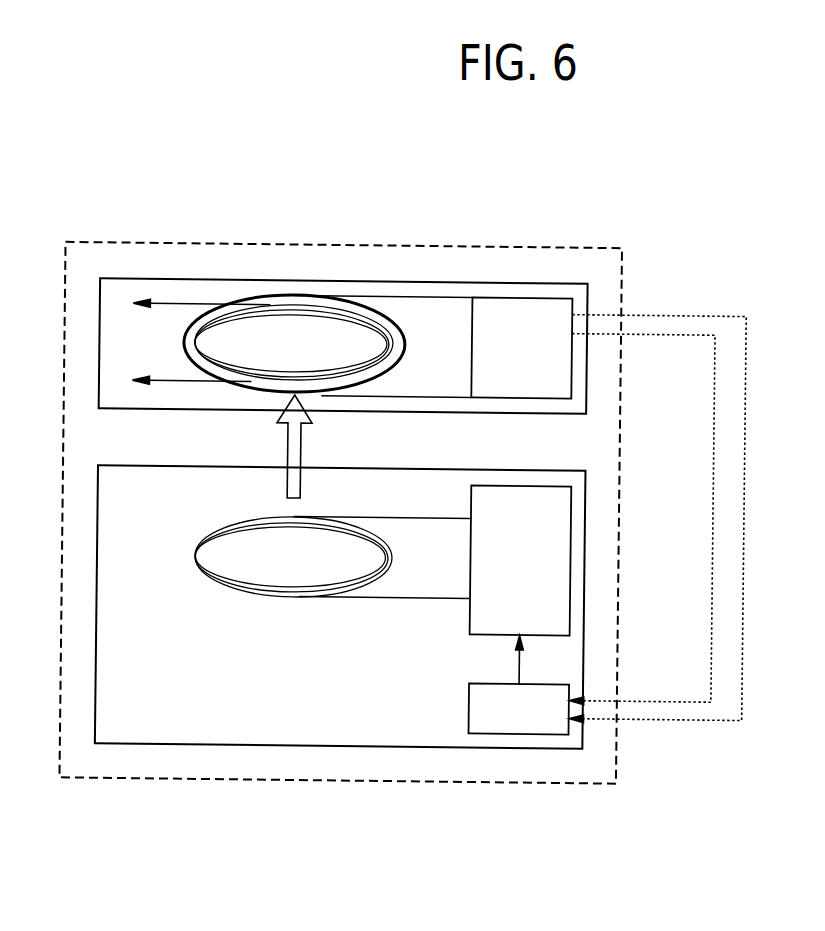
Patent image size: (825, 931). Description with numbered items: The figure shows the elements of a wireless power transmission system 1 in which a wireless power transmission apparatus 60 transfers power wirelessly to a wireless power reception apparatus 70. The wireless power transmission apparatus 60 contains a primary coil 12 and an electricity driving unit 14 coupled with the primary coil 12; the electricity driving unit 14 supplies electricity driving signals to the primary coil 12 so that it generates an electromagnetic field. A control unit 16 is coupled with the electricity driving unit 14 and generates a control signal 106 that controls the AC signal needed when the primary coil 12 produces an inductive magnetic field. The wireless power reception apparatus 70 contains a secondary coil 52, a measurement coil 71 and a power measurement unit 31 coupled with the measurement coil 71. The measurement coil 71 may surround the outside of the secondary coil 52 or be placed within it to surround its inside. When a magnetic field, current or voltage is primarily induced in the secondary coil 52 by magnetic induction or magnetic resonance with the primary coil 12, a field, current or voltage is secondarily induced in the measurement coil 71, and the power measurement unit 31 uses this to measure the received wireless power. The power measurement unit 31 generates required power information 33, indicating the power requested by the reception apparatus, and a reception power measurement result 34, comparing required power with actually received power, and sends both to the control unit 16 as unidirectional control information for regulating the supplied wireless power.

The wireless power transmission system 1 is at (535, 786).
The wireless power reception apparatus 70 is at (411, 280).
The measurement coil 71 is at (189, 358).
The secondary coil 52 is at (231, 323).
The power measurement unit 31 is at (521, 347).
The required power information 33 is at (746, 455).
The reception power measurement result 34 is at (712, 469).
The primary coil 12 is at (198, 573).
The electricity driving unit 14 is at (521, 560).
The control unit 16 is at (518, 708).
The control signal 106 is at (520, 664).
The wireless power transmission apparatus 60 is at (440, 748).